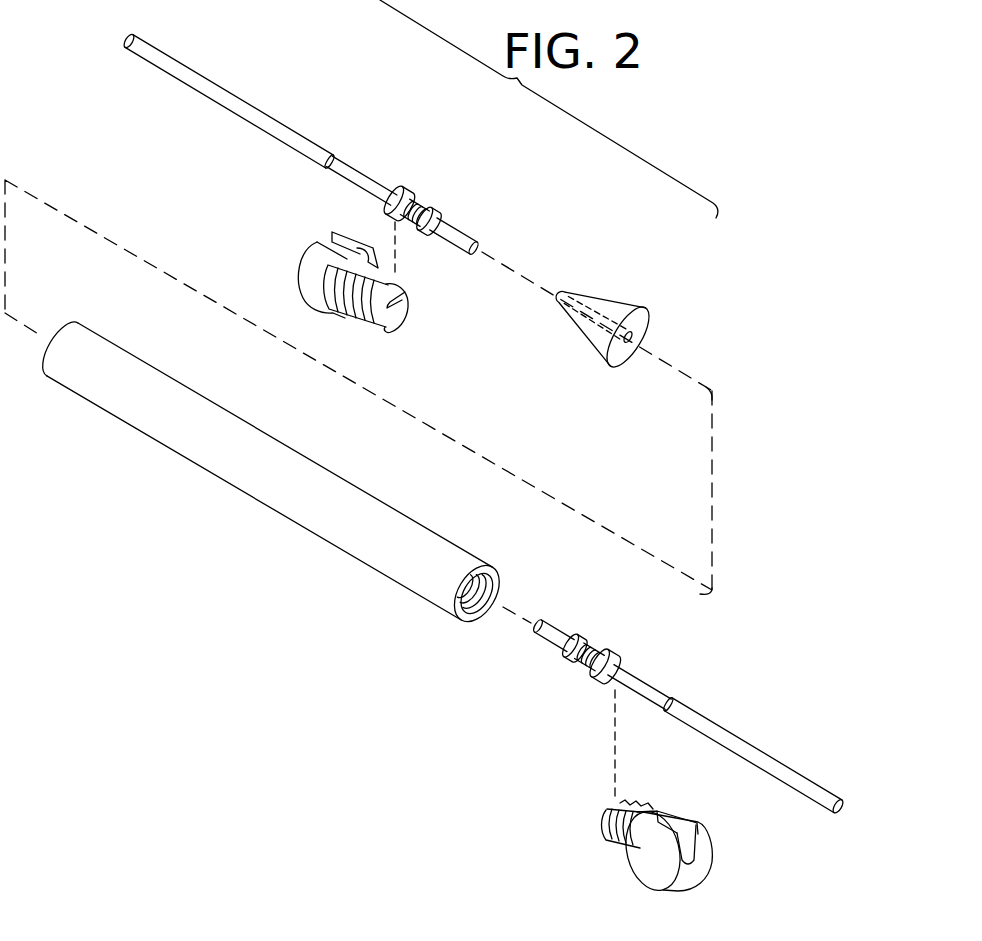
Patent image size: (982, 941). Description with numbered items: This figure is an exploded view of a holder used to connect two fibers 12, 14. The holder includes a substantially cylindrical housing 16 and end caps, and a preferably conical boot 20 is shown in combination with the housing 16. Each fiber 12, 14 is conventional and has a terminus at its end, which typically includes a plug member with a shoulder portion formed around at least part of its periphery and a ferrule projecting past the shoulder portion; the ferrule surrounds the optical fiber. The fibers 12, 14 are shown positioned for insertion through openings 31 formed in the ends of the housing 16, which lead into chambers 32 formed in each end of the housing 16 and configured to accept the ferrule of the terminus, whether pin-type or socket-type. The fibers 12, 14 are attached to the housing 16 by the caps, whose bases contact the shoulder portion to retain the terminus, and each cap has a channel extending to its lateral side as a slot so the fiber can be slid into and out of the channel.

The fiber 12 is at (261, 108).
The fiber 14 is at (797, 776).
The housing 16 is at (326, 519).
The boot 20 is at (618, 305).
The opening 31 is at (495, 566).
The chamber 32 is at (479, 622).